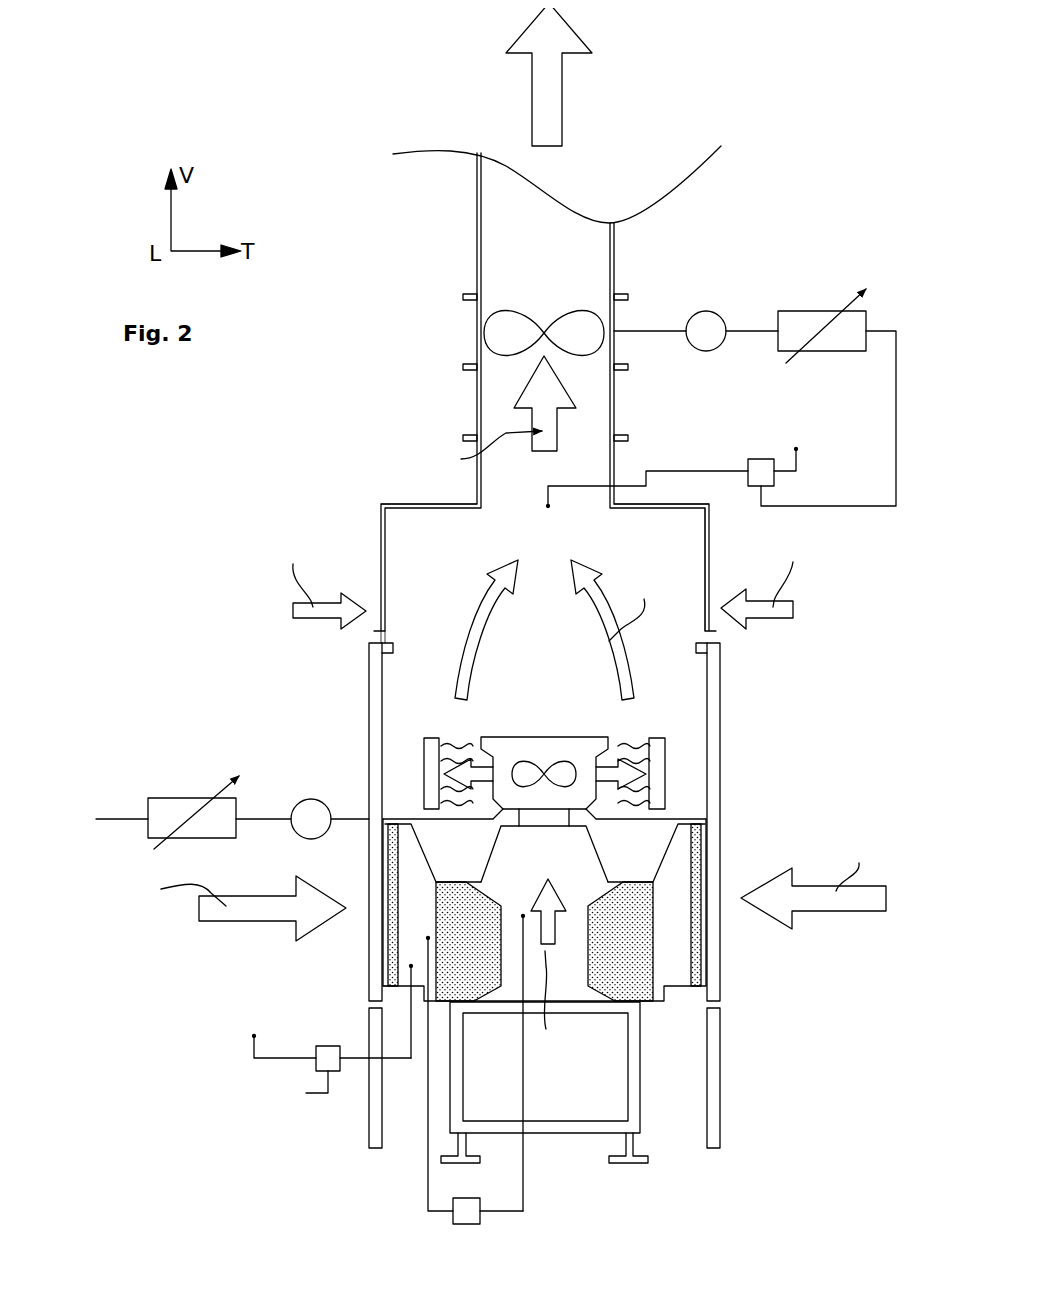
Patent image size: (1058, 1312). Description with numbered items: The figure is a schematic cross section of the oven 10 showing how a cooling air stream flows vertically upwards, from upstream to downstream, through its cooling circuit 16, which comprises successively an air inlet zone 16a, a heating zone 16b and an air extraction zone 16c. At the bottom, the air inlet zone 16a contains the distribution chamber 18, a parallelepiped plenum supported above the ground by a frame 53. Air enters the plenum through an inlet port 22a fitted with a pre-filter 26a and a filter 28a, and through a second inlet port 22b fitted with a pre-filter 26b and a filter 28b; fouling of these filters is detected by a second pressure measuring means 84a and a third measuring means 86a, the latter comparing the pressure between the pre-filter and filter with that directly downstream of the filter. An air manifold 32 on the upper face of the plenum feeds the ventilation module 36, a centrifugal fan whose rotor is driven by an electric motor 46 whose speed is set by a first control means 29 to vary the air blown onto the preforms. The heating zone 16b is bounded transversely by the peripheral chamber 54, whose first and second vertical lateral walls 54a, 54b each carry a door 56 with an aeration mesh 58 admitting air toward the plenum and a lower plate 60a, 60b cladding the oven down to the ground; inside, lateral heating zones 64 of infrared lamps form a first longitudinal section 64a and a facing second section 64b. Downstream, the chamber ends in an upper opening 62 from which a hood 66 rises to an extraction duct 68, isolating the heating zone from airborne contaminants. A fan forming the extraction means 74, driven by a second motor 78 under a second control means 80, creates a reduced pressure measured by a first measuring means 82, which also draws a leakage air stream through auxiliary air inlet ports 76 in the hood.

The oven 10 is at (348, 184).
The cooling circuit 16 is at (430, 575).
The air inlet zone 16a is at (215, 997).
The heating zone 16b is at (248, 714).
The air extraction zone 16c is at (305, 423).
The distribution chamber 18 is at (656, 1025).
The inlet port 22a is at (395, 1000).
The inlet port 22b is at (690, 1003).
The pre-filter 26a is at (386, 970).
The pre-filter 26b is at (696, 970).
The filter 28a is at (476, 965).
The filter 28b is at (612, 965).
The first control means 29 is at (165, 797).
The air manifold 32 is at (608, 847).
The ventilation module 36 is at (545, 733).
The electric motor 46 is at (310, 838).
The frame 53 is at (441, 1113).
The peripheral chamber 54 is at (312, 637).
The first vertical lateral wall 54a is at (347, 785).
The second vertical lateral wall 54b is at (740, 776).
The door 56 is at (373, 680).
The aeration mesh 58 is at (372, 935).
The lower plate 60a is at (372, 1128).
The lower plate 60b is at (716, 1128).
The upper opening 62 is at (707, 595).
The lateral heating zones 64 is at (410, 770).
The first longitudinal section of lamps 64a is at (430, 737).
The second longitudinal section of lamps 64b is at (656, 737).
The hood 66 is at (402, 492).
The extraction duct 68 is at (458, 386).
The extraction means 74 is at (510, 300).
The auxiliary air inlet ports 76 is at (372, 633).
The second motor 78 is at (706, 310).
The second control means 80 is at (805, 310).
The first measuring means 82 is at (762, 458).
The second means for measuring pressure reduction 84a is at (318, 1065).
The third measuring means 86a is at (465, 1215).